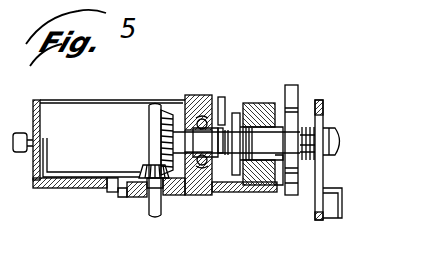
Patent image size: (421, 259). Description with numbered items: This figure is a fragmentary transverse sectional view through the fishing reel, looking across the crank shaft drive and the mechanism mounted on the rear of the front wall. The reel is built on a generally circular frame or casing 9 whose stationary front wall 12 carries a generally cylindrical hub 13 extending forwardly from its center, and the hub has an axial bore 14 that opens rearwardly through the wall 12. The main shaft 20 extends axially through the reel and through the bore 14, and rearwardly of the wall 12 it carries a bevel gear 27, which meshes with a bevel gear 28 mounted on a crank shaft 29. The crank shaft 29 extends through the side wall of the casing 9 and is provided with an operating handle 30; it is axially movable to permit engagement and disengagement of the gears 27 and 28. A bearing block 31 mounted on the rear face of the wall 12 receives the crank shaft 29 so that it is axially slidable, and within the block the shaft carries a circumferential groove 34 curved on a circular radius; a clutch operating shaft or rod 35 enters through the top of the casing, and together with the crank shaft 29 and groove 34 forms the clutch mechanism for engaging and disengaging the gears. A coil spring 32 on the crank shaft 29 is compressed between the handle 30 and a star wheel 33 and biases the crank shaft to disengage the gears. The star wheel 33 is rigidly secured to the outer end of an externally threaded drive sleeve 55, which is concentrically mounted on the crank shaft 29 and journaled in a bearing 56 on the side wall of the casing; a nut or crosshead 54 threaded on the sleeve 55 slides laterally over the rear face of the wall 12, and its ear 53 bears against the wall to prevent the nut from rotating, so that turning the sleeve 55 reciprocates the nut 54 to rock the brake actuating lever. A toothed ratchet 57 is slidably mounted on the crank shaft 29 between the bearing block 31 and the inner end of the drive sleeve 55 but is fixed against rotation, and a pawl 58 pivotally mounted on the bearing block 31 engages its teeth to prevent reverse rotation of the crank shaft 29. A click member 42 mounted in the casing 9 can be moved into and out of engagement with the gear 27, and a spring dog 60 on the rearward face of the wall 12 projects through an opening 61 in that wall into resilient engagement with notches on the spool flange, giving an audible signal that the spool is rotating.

The frame or casing 9 is at (35, 108).
The main shaft 20 is at (140, 108).
The click member 42 is at (64, 170).
The bevel gear 28 is at (152, 128).
The bevel gear 27 is at (138, 163).
The opening 61 is at (105, 186).
The spring dog 60 is at (111, 193).
The axial bore 14 is at (130, 198).
The hub 13 is at (157, 215).
The circumferential groove 34 is at (172, 196).
The toothed ratchet 57 is at (217, 192).
The ear 53 is at (237, 176).
The front wall 12 is at (250, 192).
The bearing 56 is at (278, 186).
The crank shaft 29 is at (185, 112).
The clutch operating shaft or rod 35 is at (190, 95).
The bearing block 31 is at (205, 100).
The pawl 58 is at (222, 97).
The nut or crosshead 54 is at (245, 102).
The drive sleeve 55 is at (262, 103).
The star wheel 33 is at (293, 85).
The coil spring 32 is at (305, 123).
The operating handle 30 is at (325, 168).